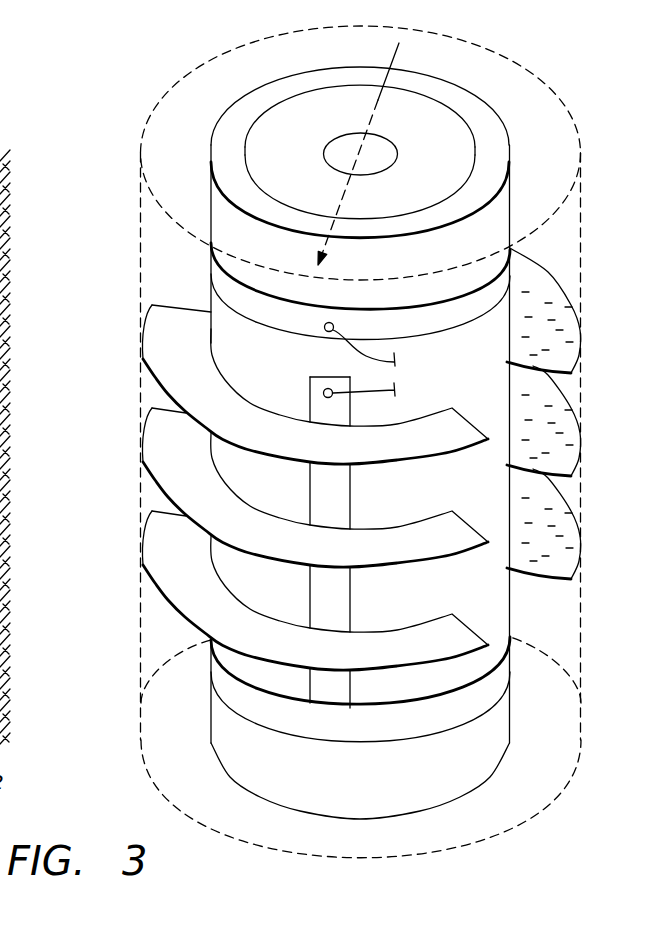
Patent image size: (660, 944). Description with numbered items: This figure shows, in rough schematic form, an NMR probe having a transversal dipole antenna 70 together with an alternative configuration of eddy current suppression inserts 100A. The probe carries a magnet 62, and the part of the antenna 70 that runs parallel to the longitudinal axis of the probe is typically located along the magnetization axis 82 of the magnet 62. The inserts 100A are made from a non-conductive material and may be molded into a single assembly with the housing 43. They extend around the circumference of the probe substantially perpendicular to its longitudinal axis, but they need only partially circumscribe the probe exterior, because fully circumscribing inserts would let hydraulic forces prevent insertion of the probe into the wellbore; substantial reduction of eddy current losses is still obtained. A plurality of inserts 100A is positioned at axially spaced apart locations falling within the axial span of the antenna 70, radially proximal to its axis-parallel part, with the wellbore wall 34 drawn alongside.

The borehole wall 34 is at (0, 397).
The housing 43 is at (278, 83).
The magnet 62 is at (327, 99).
The magnetization axis 82 is at (348, 181).
The inserts 100A is at (143, 360).
The antenna 70 is at (323, 745).